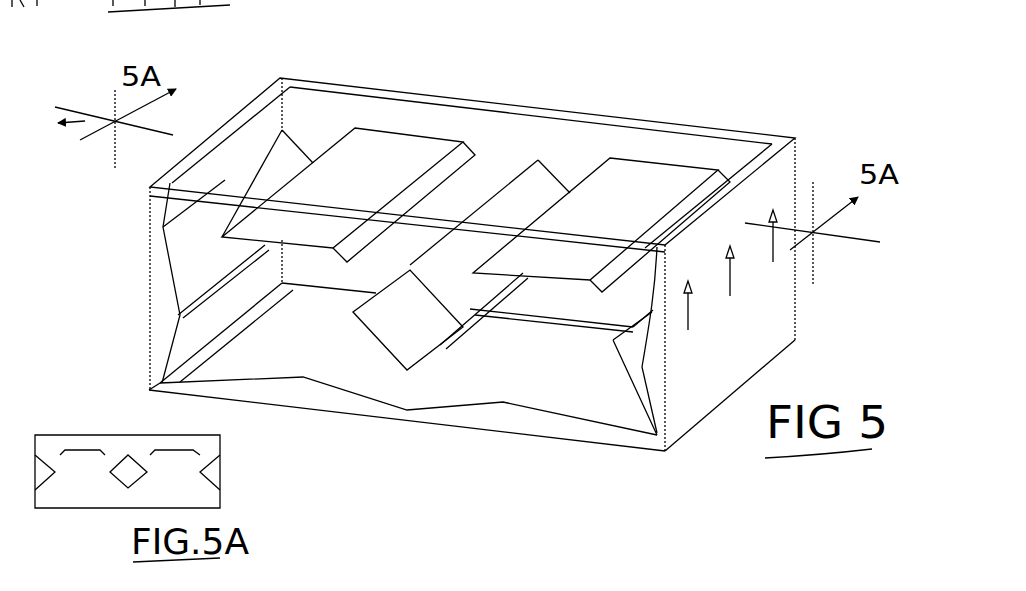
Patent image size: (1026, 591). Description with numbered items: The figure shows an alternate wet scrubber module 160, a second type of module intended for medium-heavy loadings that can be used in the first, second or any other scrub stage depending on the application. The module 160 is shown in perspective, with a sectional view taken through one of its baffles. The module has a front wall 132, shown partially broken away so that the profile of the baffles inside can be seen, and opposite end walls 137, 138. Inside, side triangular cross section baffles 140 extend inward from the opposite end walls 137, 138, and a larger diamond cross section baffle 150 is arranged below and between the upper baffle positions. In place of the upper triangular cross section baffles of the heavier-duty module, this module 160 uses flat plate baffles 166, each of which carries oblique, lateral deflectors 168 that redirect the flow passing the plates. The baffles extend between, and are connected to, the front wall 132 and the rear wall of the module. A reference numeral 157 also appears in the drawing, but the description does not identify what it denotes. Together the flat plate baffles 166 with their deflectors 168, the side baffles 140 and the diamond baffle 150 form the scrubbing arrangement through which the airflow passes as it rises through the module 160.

In FIG. 5, the front wall 132 is at (653, 377).
In FIG. 5, the end wall 137 is at (258, 133).
In FIG. 5, the end wall 138 is at (752, 361).
In FIG. 5, the side triangular cross section baffle 140 is at (163, 232).
In FIG. 5A, the side triangular cross section baffle 140 is at (52, 480).
In FIG. 5, the larger diamond cross section baffle 150 is at (388, 353).
In FIG. 5A, the larger diamond cross section baffle 150 is at (122, 482).
In FIG. 5, the rail 157 is at (548, 105).
In FIG. 5, the alternate module 160 is at (373, 84).
In FIG. 5, the flat plate baffle 166 is at (379, 156).
In FIG. 5A, the flat plate baffle 166 is at (84, 442).
In FIG. 5, the oblique lateral deflector 168 is at (217, 242).